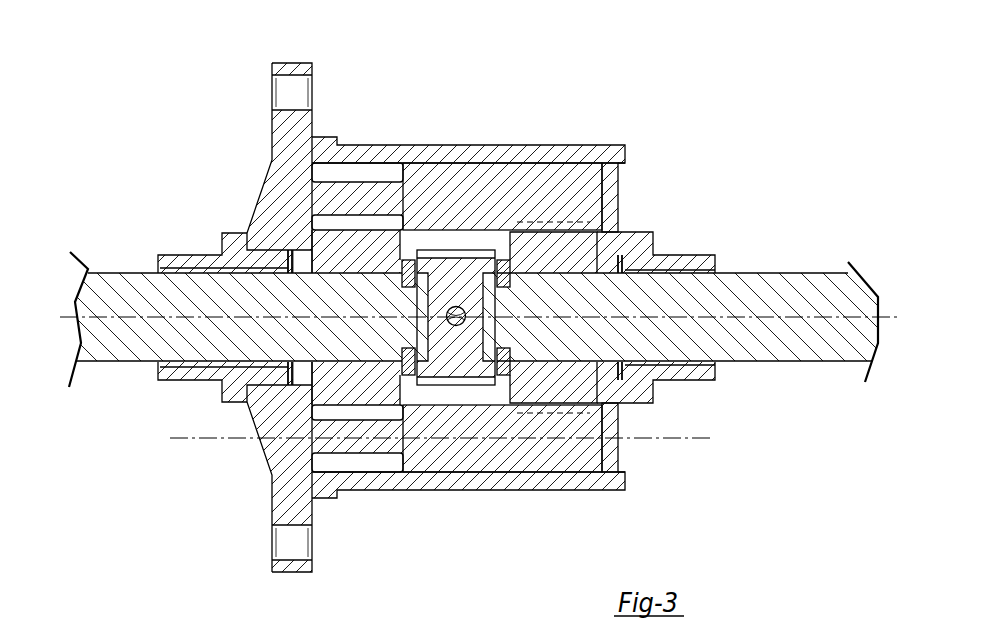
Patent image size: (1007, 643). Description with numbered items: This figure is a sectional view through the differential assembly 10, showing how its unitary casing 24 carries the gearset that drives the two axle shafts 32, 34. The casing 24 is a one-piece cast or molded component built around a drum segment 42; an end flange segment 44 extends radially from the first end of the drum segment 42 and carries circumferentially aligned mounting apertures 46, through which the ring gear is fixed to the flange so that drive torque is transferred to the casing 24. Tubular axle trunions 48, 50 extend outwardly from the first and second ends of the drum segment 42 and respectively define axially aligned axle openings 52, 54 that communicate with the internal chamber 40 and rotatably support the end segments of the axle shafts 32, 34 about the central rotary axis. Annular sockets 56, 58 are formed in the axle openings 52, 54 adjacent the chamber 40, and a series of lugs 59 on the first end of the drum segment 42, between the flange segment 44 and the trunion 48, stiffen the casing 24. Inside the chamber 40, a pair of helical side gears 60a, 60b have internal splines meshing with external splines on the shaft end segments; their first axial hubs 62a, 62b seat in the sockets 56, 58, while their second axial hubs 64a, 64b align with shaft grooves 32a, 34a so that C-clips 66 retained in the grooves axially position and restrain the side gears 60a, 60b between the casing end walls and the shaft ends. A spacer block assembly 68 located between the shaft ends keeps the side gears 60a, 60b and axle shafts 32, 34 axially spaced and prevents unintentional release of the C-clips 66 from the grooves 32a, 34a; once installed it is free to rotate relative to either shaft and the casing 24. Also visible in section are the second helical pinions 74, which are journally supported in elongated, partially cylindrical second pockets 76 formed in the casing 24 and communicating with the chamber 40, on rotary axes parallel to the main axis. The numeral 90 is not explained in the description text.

The differential assembly 10 is at (547, 86).
The casing 24 is at (578, 135).
The axle shaft 32 is at (110, 287).
The shaft groove 32a is at (410, 290).
The axle shaft 34 is at (822, 303).
The shaft groove 34a is at (503, 290).
The internal chamber 40 is at (487, 401).
The drum segment 42 is at (463, 167).
The end flange segment 44 is at (271, 141).
The mounting apertures 46 is at (279, 93).
The axle trunion 48 is at (172, 375).
The axle trunion 50 is at (712, 385).
The axle opening 52 is at (155, 357).
The axle opening 54 is at (685, 280).
The annular socket 56 is at (275, 262).
The annular socket 58 is at (640, 374).
The lugs 59 is at (256, 197).
The helical side gear 60a is at (362, 396).
The helical side gear 60b is at (570, 396).
The first axial hub 62a is at (262, 439).
The first axial hub 62b is at (650, 244).
The second axial hub 64a is at (406, 258).
The second axial hub 64b is at (503, 258).
The C-clips 66 is at (623, 162).
The spacer block assembly 68 is at (457, 394).
The second helical pinions 74 is at (463, 180).
The second pockets 76 is at (352, 166).
The end plate 90 is at (611, 197).